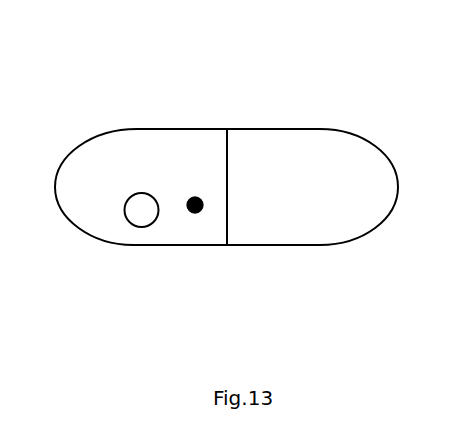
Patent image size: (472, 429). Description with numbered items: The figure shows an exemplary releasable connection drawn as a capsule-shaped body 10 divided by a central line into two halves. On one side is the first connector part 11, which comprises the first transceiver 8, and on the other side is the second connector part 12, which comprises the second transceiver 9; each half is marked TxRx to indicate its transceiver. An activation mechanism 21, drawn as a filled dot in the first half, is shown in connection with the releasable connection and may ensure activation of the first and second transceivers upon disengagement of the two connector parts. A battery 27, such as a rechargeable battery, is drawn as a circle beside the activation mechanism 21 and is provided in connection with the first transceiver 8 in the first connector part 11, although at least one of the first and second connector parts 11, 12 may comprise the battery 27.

The first transceiver 8 is at (141, 142).
The first connector part 11 is at (135, 129).
The second transceiver 9 is at (312, 141).
The second connector part 12 is at (338, 130).
The capsule device housing 10 is at (226, 199).
The activation mechanism 21 is at (191, 214).
The battery 27 is at (136, 225).